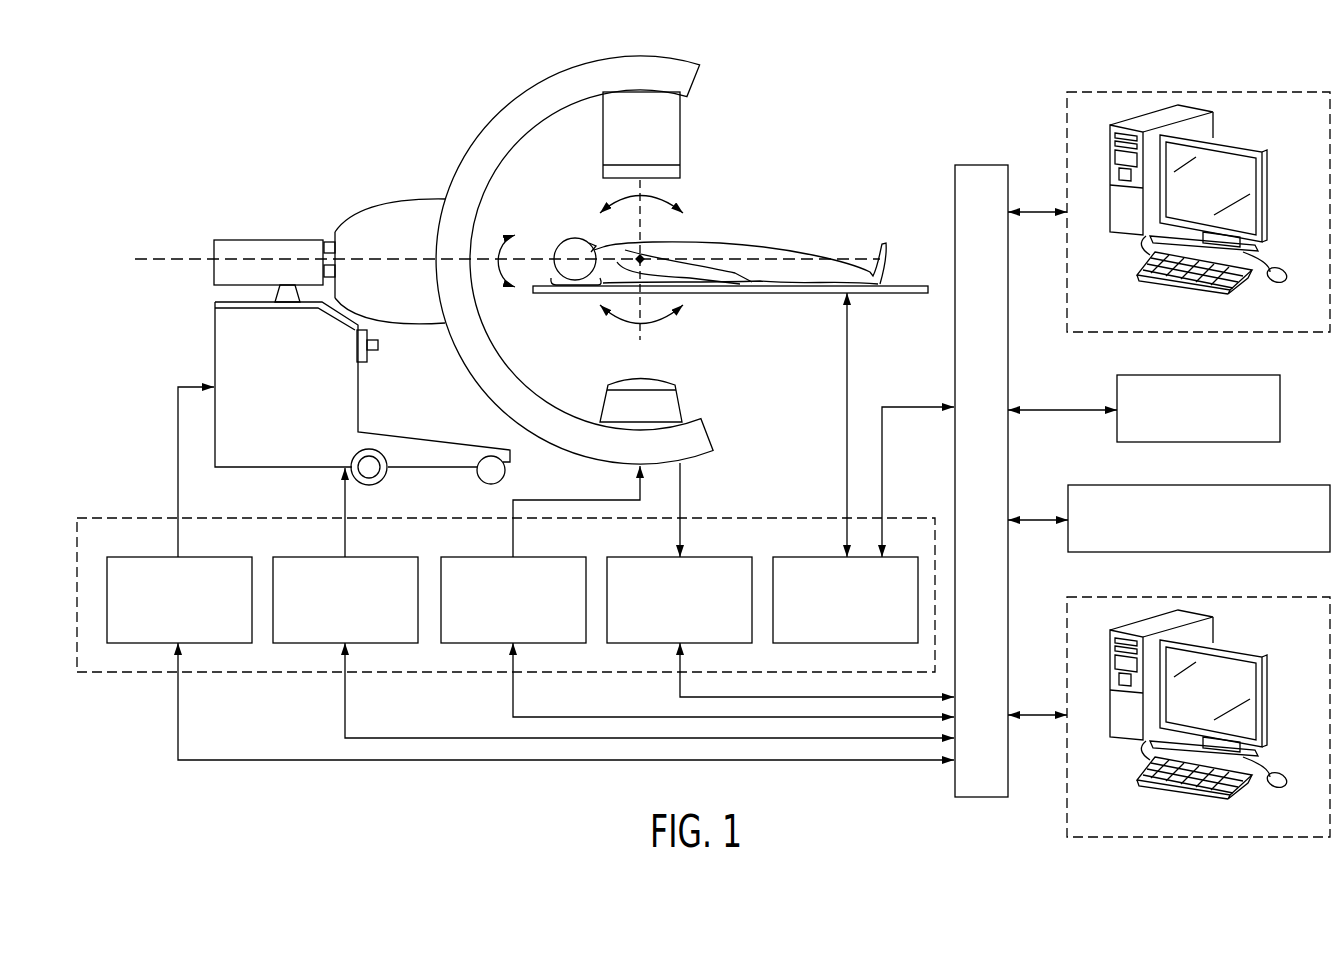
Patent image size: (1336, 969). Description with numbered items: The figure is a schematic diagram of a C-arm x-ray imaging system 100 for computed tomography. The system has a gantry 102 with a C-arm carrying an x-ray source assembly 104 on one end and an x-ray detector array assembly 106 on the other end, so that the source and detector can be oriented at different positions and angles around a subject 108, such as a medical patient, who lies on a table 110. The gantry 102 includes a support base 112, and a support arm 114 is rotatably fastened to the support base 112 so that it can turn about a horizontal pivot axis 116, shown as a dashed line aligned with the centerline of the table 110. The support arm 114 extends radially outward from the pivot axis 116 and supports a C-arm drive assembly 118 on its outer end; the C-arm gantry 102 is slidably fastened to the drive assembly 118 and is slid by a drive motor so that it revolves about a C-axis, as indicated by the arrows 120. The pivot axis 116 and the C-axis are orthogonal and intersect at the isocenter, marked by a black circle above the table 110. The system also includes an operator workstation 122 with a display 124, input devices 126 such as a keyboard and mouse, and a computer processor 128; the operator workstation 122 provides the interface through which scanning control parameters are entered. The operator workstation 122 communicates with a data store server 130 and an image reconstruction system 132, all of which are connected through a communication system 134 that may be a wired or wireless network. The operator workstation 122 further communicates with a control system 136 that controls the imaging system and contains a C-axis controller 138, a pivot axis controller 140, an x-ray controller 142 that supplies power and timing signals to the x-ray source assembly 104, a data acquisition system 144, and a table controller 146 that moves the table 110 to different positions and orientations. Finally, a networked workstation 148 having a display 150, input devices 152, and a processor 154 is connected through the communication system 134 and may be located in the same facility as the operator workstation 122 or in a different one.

The C-arm x-ray imaging system 100 is at (176, 113).
The gantry 102 is at (478, 133).
The x-ray source assembly 104 is at (681, 137).
The x-ray detector array assembly 106 is at (678, 400).
The subject 108 is at (724, 237).
The table 110 is at (872, 295).
The support base 112 is at (215, 346).
The support arm 114 is at (301, 238).
The pivot axis 116 is at (197, 261).
The C-arm drive assembly 118 is at (370, 207).
The arrows 120 is at (670, 198).
The operator workstation 122 is at (1268, 92).
The display 124 is at (1235, 146).
The input devices 126 is at (1137, 262).
The computer processor 128 is at (1140, 118).
The data store server 130 is at (1220, 375).
The image reconstruction system 132 is at (1268, 485).
The communication system 134 is at (975, 165).
The control system 136 is at (740, 518).
The C-axis controller 138 is at (195, 557).
The pivot axis controller 140 is at (360, 557).
The x-ray controller 142 is at (527, 557).
The data acquisition system 144 is at (695, 557).
The table controller 146 is at (825, 557).
The networked workstation 148 is at (1268, 597).
The display 150 is at (1235, 651).
The input devices 152 is at (1137, 767).
The processor 154 is at (1140, 623).